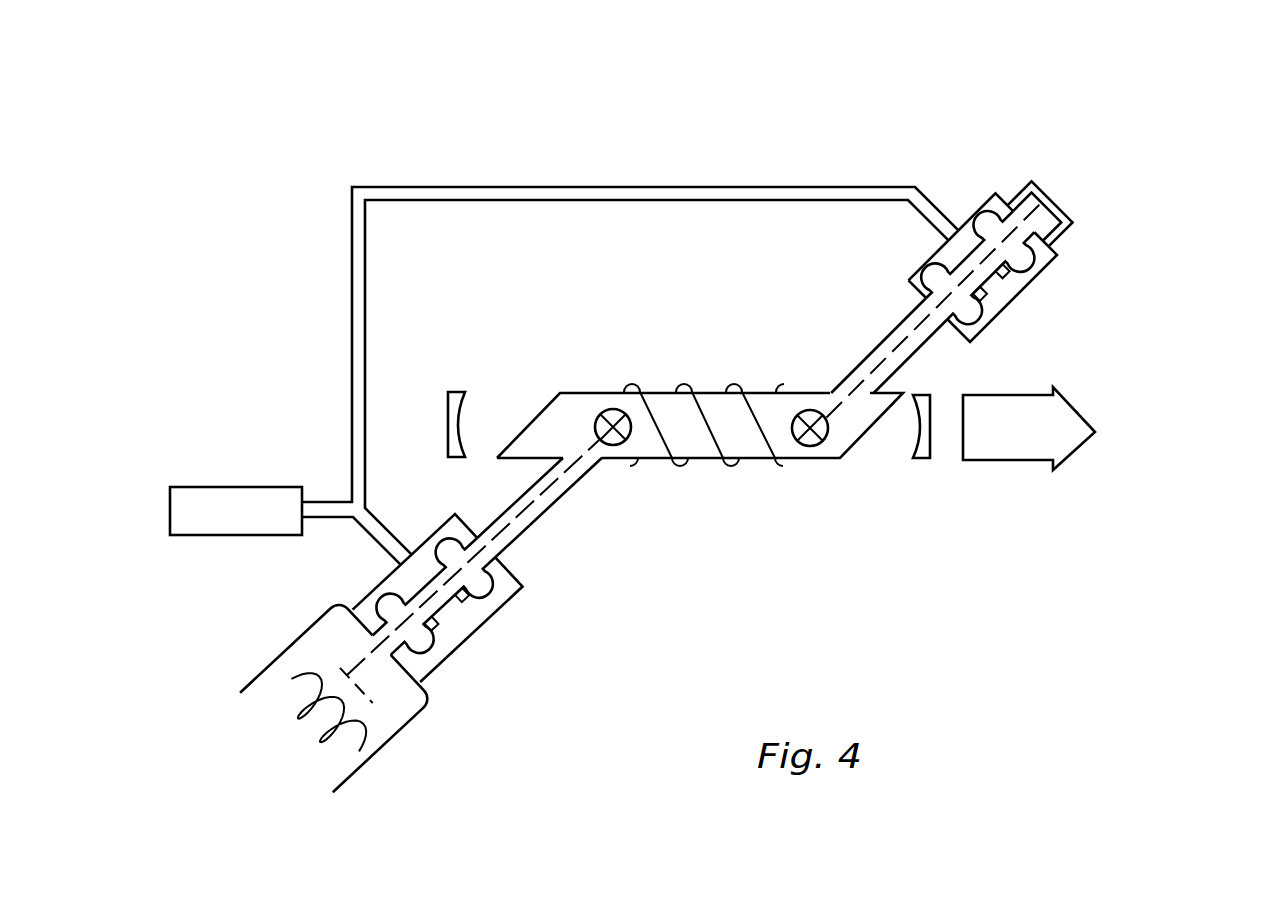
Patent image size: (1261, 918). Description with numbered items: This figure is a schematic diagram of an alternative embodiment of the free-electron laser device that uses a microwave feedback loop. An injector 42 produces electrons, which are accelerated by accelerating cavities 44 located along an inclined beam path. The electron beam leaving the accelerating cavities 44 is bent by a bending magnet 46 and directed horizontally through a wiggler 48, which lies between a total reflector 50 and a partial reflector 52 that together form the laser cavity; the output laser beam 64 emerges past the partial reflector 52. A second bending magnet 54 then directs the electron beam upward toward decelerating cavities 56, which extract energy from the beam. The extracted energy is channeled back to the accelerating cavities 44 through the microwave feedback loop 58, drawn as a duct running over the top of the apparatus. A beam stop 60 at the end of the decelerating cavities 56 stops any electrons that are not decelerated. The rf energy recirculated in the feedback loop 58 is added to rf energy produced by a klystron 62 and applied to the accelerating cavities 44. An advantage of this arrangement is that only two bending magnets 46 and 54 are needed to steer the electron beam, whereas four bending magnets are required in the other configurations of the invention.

The injector 42 is at (365, 775).
The accelerating cavities 44 is at (493, 612).
The bending magnet 46 is at (610, 440).
The wiggler 48 is at (736, 462).
The total reflector 50 is at (458, 392).
The partial reflector 52 is at (918, 458).
The bending magnet 54 is at (810, 410).
The decelerating cavities 56 is at (1015, 303).
The microwave feedback loop 58 is at (438, 187).
The beam stop 60 is at (1060, 212).
The klystron 62 is at (200, 487).
The output laser beam 64 is at (1085, 442).